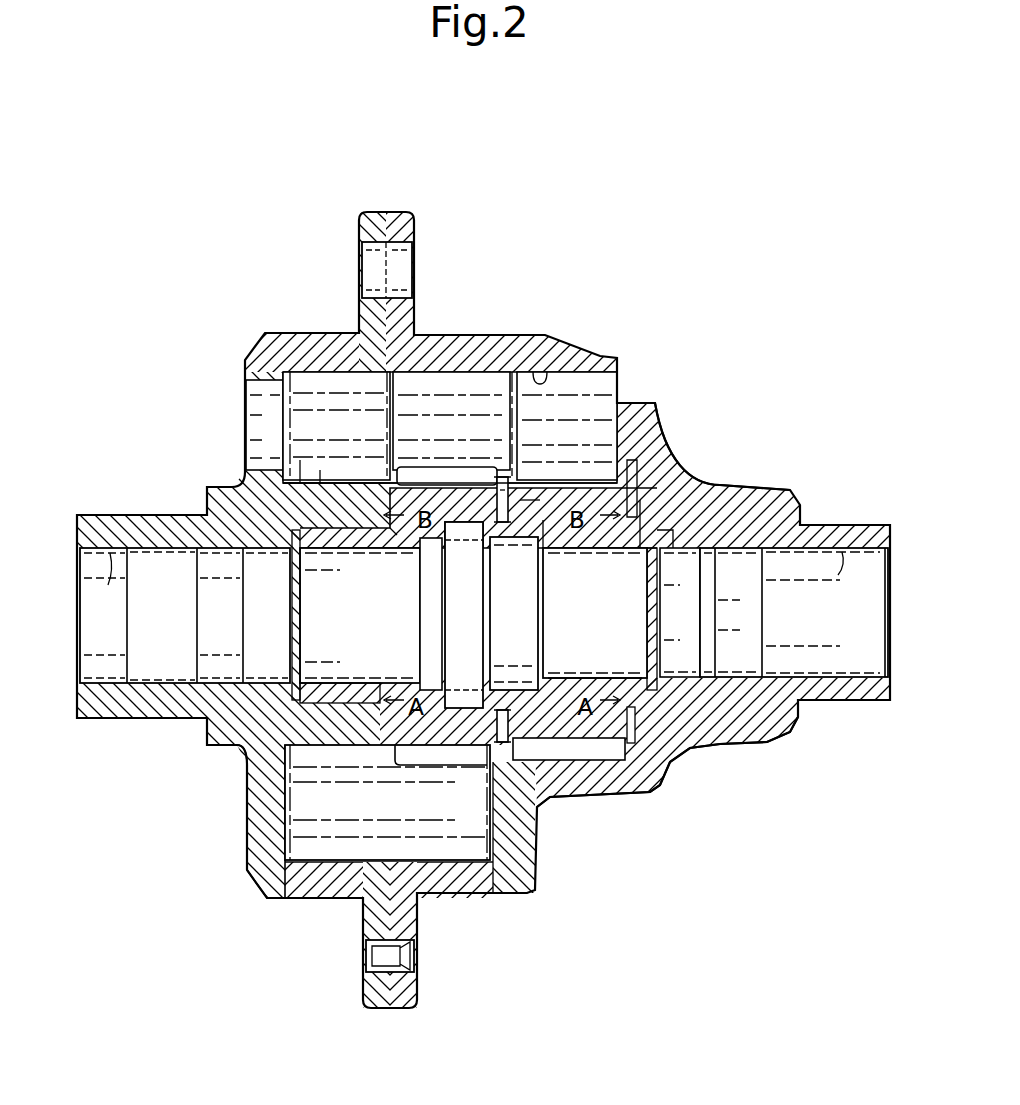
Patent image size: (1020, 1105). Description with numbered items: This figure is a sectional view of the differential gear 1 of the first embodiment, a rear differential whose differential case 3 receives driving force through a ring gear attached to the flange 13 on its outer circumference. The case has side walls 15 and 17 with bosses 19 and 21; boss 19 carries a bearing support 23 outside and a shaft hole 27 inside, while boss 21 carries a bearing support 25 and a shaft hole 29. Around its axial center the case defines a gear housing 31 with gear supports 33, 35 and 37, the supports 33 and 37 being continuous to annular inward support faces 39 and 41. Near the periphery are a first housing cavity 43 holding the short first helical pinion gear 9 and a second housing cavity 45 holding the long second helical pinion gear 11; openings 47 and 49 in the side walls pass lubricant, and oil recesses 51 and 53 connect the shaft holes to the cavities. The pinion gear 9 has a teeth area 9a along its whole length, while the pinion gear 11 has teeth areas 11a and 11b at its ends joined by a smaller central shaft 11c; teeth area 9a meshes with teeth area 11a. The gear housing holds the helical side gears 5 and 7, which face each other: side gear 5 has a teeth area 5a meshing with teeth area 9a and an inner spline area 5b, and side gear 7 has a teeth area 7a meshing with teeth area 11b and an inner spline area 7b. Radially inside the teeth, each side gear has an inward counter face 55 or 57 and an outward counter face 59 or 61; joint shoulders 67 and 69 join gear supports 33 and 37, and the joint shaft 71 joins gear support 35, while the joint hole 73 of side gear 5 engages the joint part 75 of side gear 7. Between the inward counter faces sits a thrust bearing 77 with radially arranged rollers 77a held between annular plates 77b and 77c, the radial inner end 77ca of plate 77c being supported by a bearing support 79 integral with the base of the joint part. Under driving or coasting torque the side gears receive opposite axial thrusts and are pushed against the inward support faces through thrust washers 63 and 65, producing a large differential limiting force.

The differential gear 1 is at (642, 228).
The differential case 3 is at (292, 326).
The helical side gear 5 is at (283, 400).
The teeth area 5a is at (533, 867).
The inner spline area 5b is at (298, 572).
The helical side gear 7 is at (642, 440).
The teeth area 7a is at (627, 800).
The inner spline area 7b is at (660, 560).
The first helical pinion gear 9 is at (313, 900).
The teeth area 9a is at (338, 893).
The second helical pinion gear 11 is at (330, 350).
The teeth area 11a is at (345, 360).
The teeth area 11b is at (575, 375).
The central shaft 11c is at (445, 395).
The flange 13 is at (410, 212).
The side wall 15 is at (242, 395).
The side wall 17 is at (660, 470).
The boss 19 is at (218, 522).
The boss 21 is at (772, 490).
The bearing support 23 is at (180, 522).
The bearing support 25 is at (848, 522).
The shaft hole 27 is at (100, 582).
The shaft hole 29 is at (835, 575).
The gear housing 31 is at (476, 640).
The gear support 33 is at (398, 527).
The gear support 35 is at (382, 548).
The gear support 37 is at (660, 520).
The inward support face 39 is at (408, 540).
The inward support face 41 is at (640, 500).
The first housing cavity 43 is at (437, 847).
The second housing cavity 45 is at (540, 372).
The opening 47 is at (300, 460).
The opening 49 is at (545, 498).
The oil recess 51 is at (285, 745).
The oil recess 53 is at (688, 462).
The inward counter face 55 is at (545, 690).
The inward counter face 57 is at (482, 708).
The outward counter face 59 is at (283, 822).
The outward counter face 61 is at (655, 765).
The thrust washer 63 is at (400, 703).
The thrust washer 65 is at (645, 700).
The joint shoulder 67 is at (322, 472).
The joint shoulder 69 is at (702, 482).
The joint shaft 71 is at (395, 535).
The joint hole 73 is at (466, 540).
The joint part 75 is at (503, 545).
The thrust bearing 77 is at (510, 760).
The roller 77a is at (505, 478).
The annular plate 77b is at (498, 500).
The annular plate 77c is at (548, 500).
The radial inner end 77ca is at (515, 530).
The bearing support 79 is at (500, 700).